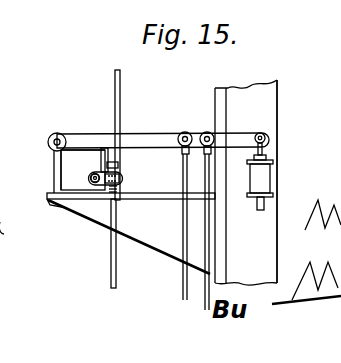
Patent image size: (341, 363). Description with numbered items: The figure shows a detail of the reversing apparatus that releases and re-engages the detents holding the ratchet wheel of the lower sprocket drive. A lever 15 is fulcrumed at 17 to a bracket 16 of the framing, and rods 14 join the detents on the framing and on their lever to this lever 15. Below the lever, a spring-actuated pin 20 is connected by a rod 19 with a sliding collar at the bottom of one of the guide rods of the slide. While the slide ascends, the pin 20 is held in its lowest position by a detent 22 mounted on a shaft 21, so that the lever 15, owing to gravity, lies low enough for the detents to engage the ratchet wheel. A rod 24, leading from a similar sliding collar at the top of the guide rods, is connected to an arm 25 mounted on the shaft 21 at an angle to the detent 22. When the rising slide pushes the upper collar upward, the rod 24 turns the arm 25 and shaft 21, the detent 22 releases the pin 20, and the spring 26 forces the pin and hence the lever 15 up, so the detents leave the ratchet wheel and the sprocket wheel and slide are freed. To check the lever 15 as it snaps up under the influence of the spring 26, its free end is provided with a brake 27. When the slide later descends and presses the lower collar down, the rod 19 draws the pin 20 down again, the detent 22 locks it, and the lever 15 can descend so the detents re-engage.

The rods 14 is at (206, 272).
The lever 15 is at (150, 134).
The bracket 16 is at (53, 170).
The fulcrum 17 is at (60, 134).
The rod 19 is at (111, 257).
The spring-actuated pin 20 is at (112, 194).
The shaft 21 is at (104, 149).
The detent 22 is at (92, 152).
The rod 24 is at (121, 77).
The arm 25 is at (97, 168).
The spring 26 is at (122, 180).
The brake 27 is at (270, 175).